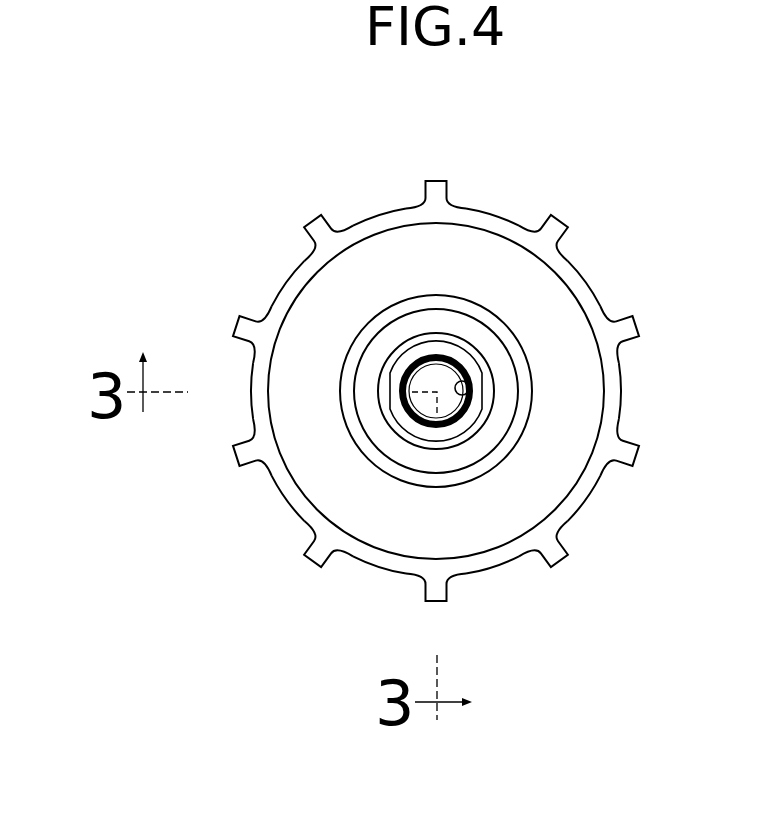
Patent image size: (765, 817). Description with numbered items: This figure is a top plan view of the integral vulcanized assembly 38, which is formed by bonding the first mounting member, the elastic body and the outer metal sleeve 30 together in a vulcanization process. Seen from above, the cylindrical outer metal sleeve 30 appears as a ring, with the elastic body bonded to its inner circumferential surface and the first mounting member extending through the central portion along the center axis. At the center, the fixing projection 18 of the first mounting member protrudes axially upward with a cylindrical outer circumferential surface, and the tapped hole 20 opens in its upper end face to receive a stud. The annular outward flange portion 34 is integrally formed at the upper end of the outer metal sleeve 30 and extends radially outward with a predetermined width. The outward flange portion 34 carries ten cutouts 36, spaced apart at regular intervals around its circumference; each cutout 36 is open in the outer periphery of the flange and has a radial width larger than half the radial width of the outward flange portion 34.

The fixing projection 18 is at (400, 415).
The tapped hole 20 is at (465, 395).
The outer metal sleeve 30 is at (566, 205).
The outward flange portion 34 is at (630, 327).
The cutouts 36 is at (427, 190).
The integral vulcanized assembly 38 is at (552, 145).